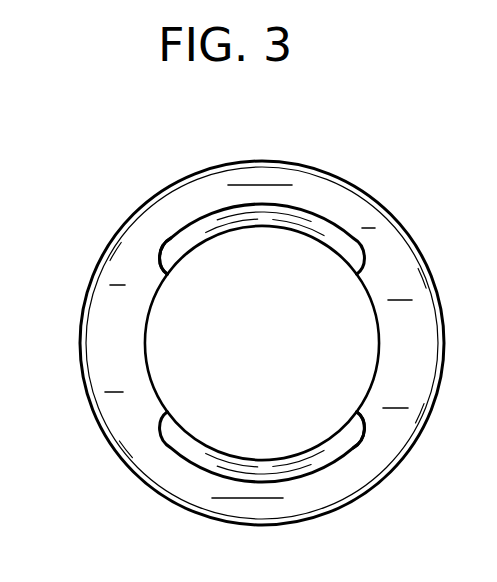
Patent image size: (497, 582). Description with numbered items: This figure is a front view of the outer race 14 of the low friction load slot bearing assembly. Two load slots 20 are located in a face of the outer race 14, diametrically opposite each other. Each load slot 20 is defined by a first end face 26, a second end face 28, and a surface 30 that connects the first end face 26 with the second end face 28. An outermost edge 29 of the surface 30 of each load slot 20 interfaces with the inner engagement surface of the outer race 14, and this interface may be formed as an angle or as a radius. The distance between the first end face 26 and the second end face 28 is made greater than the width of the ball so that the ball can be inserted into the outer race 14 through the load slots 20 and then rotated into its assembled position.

The outer race 14 is at (93, 153).
The load slot 20 is at (307, 208).
The first end face 26 is at (163, 259).
The second end face 28 is at (360, 259).
The outermost edge 29 is at (190, 224).
The surface 30 is at (233, 221).